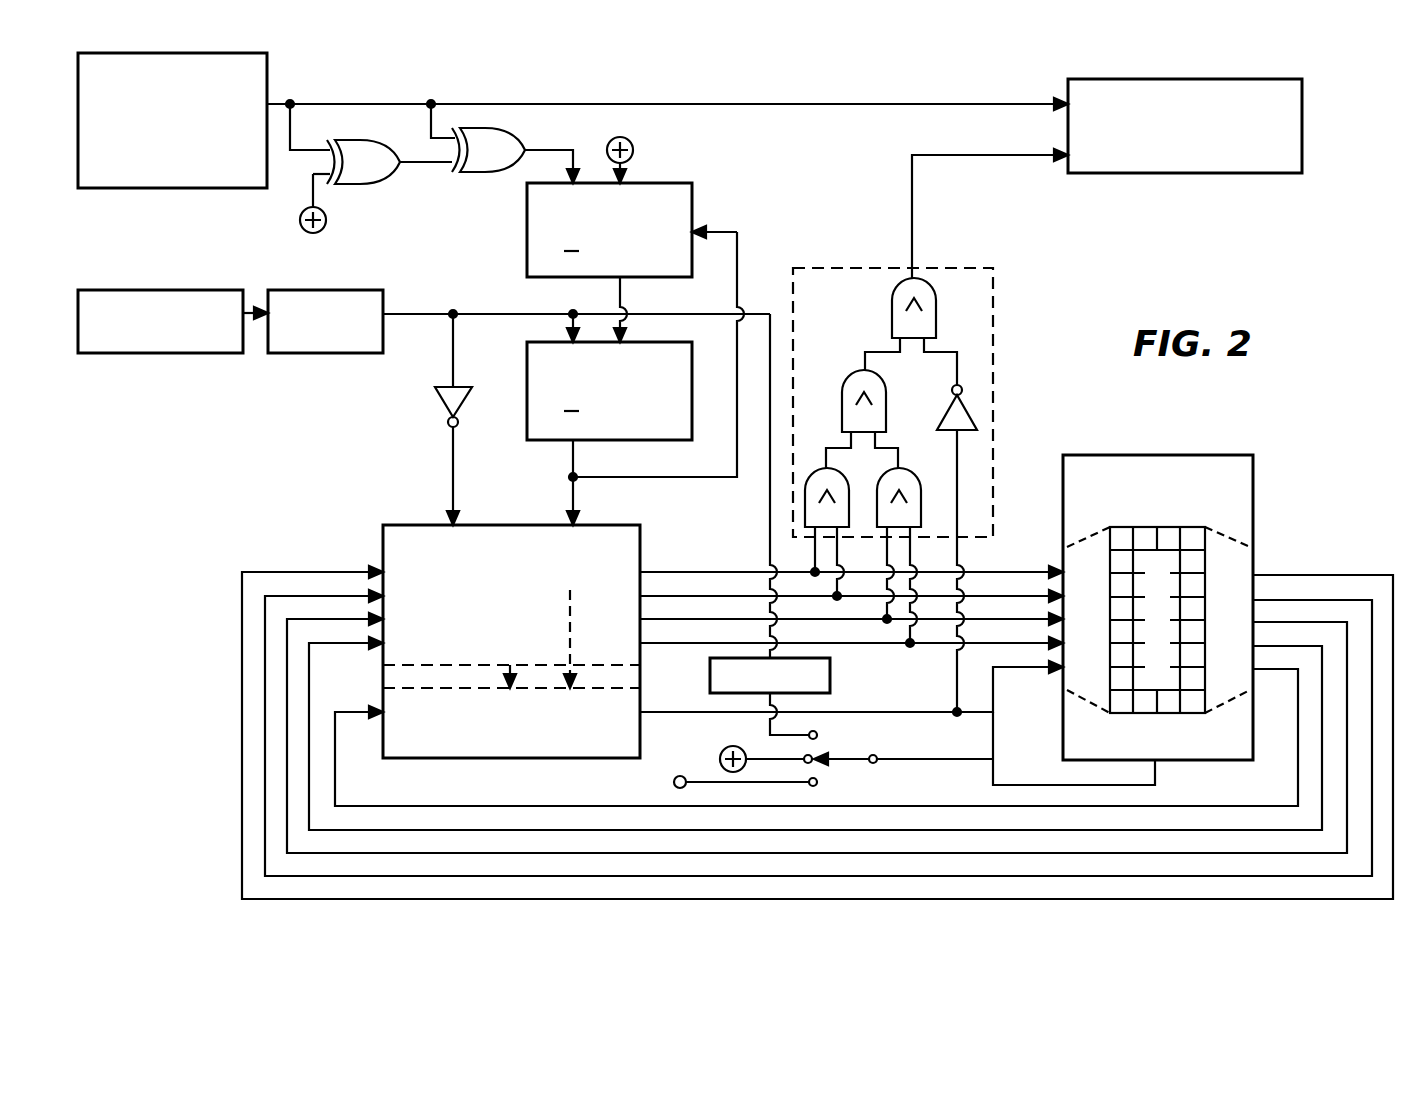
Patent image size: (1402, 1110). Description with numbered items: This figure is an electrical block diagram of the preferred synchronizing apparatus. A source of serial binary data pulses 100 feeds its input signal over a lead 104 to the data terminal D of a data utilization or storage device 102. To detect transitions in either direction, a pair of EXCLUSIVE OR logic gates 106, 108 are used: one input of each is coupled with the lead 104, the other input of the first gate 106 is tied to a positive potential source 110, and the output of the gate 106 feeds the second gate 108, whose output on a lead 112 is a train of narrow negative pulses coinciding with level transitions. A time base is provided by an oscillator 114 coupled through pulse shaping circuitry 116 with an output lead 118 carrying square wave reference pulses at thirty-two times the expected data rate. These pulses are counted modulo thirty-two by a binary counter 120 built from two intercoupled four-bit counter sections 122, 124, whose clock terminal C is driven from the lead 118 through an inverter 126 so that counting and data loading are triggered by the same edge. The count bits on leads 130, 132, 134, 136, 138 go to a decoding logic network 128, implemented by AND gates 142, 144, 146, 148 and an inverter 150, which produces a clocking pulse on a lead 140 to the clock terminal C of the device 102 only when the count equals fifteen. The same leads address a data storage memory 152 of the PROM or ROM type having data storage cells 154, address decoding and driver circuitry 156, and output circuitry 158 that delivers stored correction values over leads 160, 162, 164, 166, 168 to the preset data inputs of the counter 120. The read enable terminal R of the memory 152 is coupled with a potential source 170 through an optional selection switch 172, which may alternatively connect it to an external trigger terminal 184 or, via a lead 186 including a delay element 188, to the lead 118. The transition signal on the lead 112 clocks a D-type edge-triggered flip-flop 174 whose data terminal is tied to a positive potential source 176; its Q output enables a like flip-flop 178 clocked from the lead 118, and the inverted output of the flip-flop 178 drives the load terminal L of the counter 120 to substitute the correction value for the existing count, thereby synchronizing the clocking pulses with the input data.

The source of serial binary data pulses 100 is at (188, 53).
The data utilization or storage device 102 is at (1200, 79).
The lead 104 is at (655, 104).
The EXCLUSIVE OR logic gate 106 is at (353, 147).
The EXCLUSIVE OR logic gate 108 is at (498, 135).
The positive potential source 110 is at (326, 220).
The lead 112 is at (568, 150).
The oscillator 114 is at (160, 290).
The pulse shaping circuitry 116 is at (312, 290).
The output lead 118 is at (405, 314).
The binary counter 120 is at (500, 642).
The counter section 122 is at (600, 531).
The counter section 124 is at (550, 748).
The inverter 126 is at (433, 400).
The decoding logic network 128 is at (927, 490).
The lead 130 is at (702, 571).
The lead 132 is at (702, 595).
The lead 134 is at (702, 618).
The lead 136 is at (702, 642).
The lead 138 is at (702, 711).
The lead 140 is at (912, 200).
The AND gate 142 is at (835, 490).
The AND gate 144 is at (907, 490).
The AND gate 146 is at (880, 388).
The AND gate 148 is at (930, 302).
The inverter 150 is at (950, 403).
The data storage memory 152 is at (1186, 592).
The data storage cells 154 is at (1190, 714).
The address decoding and driver circuitry 156 is at (1088, 716).
The output circuitry 158 is at (1232, 553).
The lead 160 is at (280, 571).
The lead 162 is at (302, 596).
The lead 164 is at (328, 619).
The lead 166 is at (350, 643).
The lead 168 is at (369, 712).
The potential source 170 is at (720, 757).
The selection switch 172 is at (852, 759).
The D-type edge-triggered flip-flop 174 is at (665, 183).
The positive potential source 176 is at (631, 142).
The flip-flop 178 is at (650, 342).
The terminal 184 is at (674, 781).
The lead 186 is at (645, 314).
The delay element 188 is at (831, 676).